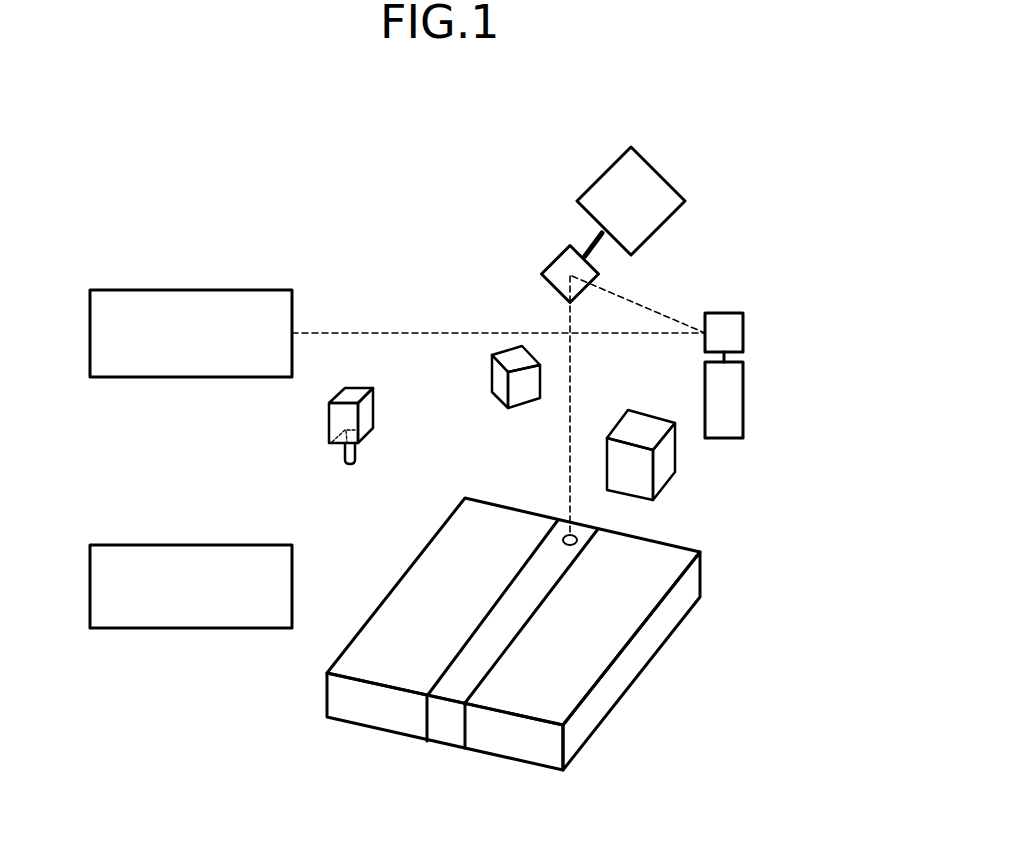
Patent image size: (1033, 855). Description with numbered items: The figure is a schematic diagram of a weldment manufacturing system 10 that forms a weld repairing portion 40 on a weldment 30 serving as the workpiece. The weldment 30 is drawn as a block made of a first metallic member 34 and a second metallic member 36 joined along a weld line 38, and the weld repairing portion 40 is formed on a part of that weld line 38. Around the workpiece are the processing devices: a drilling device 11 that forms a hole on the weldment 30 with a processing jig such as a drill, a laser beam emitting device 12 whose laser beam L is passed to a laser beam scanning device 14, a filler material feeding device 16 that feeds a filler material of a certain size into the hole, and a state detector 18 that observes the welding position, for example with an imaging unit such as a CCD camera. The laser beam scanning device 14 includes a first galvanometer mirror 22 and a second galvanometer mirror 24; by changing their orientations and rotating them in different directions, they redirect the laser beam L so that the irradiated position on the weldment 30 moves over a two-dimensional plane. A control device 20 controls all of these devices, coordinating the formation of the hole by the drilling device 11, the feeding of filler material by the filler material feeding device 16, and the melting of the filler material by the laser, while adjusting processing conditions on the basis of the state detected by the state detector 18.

The weldment manufacturing system 10 is at (214, 219).
The drilling device 11 is at (329, 423).
The laser beam emitting device 12 is at (214, 290).
The laser beam scanning device 14 is at (742, 208).
The filler material feeding device 16 is at (663, 460).
The state detector 18 is at (491, 375).
The control device 20 is at (213, 545).
The first galvanometer mirror 22 is at (660, 166).
The second galvanometer mirror 24 is at (745, 398).
The weldment 30 is at (367, 705).
The first metallic member 34 is at (448, 562).
The second metallic member 36 is at (632, 612).
The weld line 38 is at (517, 613).
The weld repairing portion 40 is at (565, 536).
The scanning laser beam L is at (412, 330).